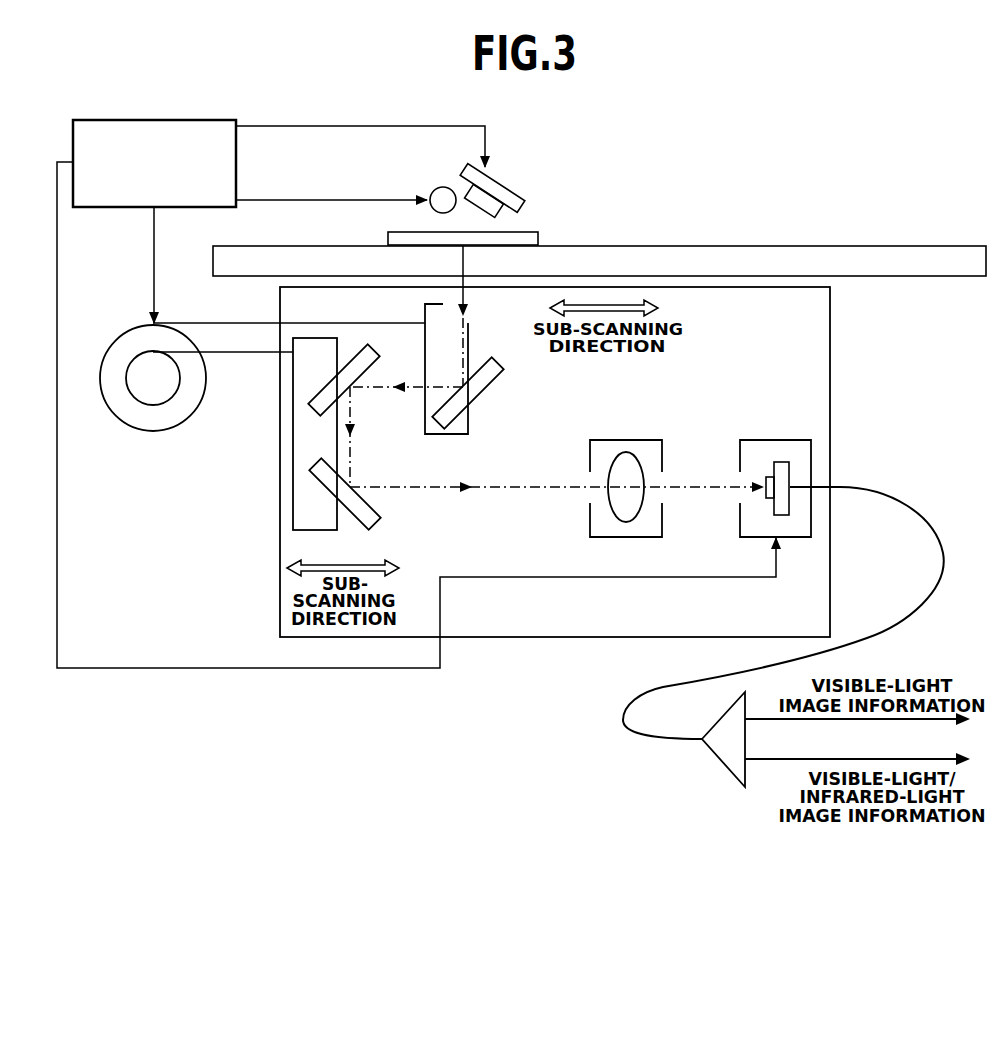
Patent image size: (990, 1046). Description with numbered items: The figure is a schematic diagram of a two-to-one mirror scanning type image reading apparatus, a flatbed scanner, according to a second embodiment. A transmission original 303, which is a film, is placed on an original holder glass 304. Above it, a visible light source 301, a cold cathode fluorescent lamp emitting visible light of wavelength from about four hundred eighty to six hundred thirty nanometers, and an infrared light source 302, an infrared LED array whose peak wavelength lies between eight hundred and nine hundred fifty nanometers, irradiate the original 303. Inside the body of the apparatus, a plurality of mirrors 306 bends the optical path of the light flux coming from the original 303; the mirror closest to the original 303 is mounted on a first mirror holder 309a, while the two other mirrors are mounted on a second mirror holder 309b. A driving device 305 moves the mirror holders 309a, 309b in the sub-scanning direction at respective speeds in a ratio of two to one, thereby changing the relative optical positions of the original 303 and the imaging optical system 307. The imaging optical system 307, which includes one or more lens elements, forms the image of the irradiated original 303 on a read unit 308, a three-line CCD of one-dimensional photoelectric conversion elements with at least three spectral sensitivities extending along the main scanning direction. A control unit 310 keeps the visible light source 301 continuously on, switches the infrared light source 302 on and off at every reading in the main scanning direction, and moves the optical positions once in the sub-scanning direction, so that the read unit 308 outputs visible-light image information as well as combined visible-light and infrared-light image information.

The visible light source 301 is at (430, 188).
The infrared light source 302 is at (522, 168).
The transmission original 303 is at (540, 233).
The original holder glass 304 is at (668, 246).
The driving device 305 is at (153, 432).
The mirrors 306 is at (321, 405).
The imaging optical system 307 is at (630, 440).
The read unit 308 is at (778, 440).
The first mirror holder 309a is at (438, 434).
The second mirror holder 309b is at (293, 520).
The control unit 310 is at (176, 120).